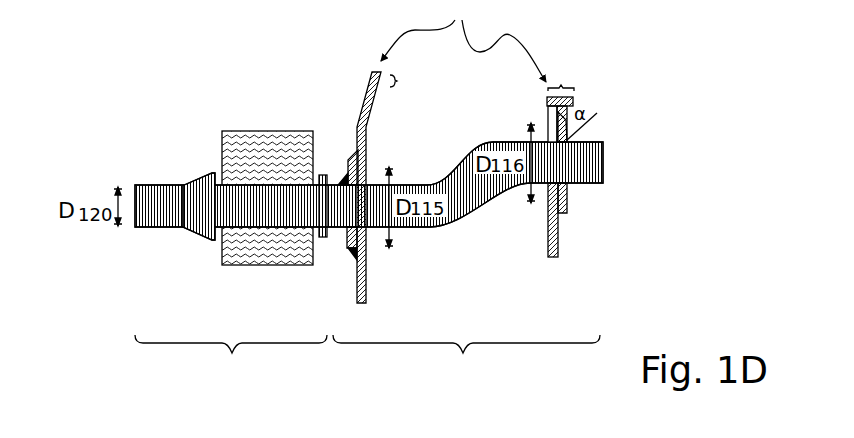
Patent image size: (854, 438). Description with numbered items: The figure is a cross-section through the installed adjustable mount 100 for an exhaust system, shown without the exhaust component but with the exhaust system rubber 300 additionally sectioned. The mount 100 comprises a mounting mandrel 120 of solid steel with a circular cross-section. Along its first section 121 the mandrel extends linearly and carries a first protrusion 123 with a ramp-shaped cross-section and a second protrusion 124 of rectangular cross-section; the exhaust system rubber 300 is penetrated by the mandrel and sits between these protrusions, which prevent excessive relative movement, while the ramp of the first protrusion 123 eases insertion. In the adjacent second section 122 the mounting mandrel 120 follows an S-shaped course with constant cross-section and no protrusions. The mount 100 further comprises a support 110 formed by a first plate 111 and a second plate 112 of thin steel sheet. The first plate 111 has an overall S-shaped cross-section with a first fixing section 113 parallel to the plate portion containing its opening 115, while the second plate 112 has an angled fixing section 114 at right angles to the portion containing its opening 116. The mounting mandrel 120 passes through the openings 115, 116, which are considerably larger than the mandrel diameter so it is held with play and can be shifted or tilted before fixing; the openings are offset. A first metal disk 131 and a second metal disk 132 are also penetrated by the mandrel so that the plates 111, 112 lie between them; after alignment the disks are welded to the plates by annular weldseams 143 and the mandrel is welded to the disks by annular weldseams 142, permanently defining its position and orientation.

The mount 100 is at (83, 76).
The support 110 is at (463, 41).
The first plate 111 is at (371, 284).
The second plate 112 is at (552, 258).
The first fixing section 113 is at (415, 81).
The angled fixing section 114 is at (569, 80).
The opening 115 is at (378, 247).
The opening 116 is at (531, 190).
The mounting mandrel 120 is at (143, 183).
The first section 121 is at (231, 365).
The second section 122 is at (466, 365).
The first protrusion 123 is at (199, 234).
The second protrusion 124 is at (323, 173).
The first metal disk 131 is at (348, 153).
The second metal disk 132 is at (567, 200).
The annular weldseam 142 is at (348, 251).
The annular weldseam 143 is at (354, 264).
The exhaust system rubber 300 is at (253, 131).